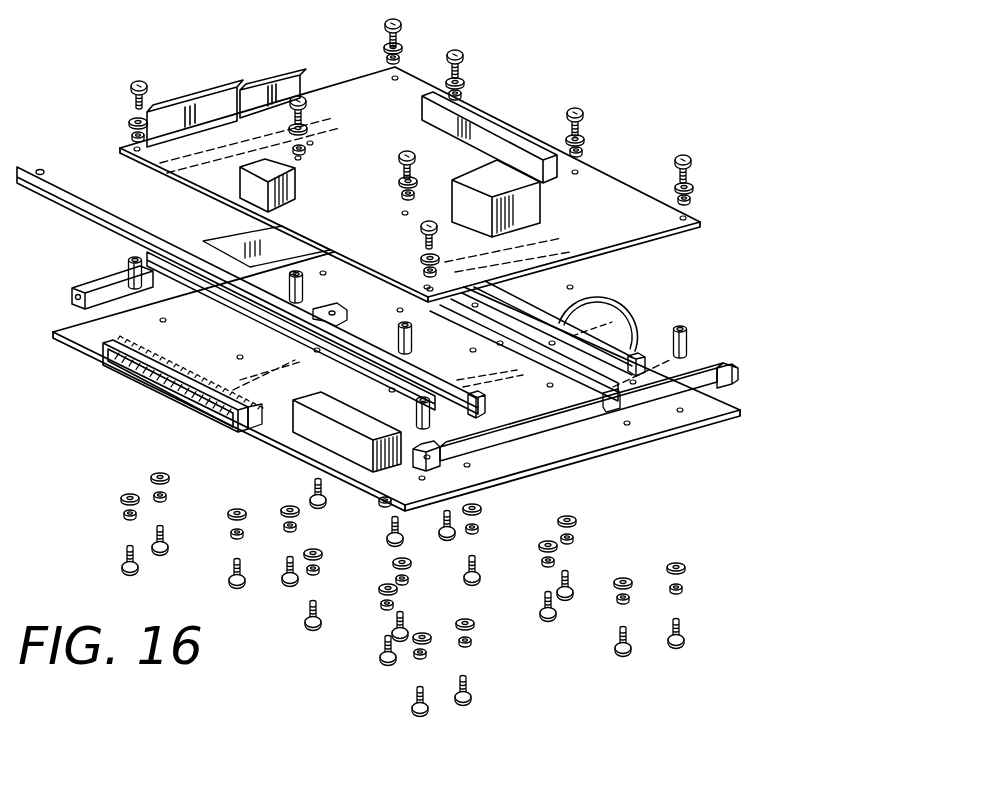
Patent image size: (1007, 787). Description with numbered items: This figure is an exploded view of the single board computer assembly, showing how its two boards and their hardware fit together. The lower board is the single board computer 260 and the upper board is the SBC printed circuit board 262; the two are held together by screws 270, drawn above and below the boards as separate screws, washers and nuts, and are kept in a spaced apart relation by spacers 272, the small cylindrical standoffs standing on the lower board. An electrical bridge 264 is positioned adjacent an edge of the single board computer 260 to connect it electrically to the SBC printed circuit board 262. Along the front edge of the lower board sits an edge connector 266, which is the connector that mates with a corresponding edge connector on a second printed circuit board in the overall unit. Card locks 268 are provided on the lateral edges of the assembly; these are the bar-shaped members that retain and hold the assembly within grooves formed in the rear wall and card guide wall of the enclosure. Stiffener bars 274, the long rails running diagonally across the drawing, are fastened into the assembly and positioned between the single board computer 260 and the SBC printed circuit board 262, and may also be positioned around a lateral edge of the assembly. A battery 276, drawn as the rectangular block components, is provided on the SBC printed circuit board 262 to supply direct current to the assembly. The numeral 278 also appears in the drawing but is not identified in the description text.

The single board computer 260 is at (715, 415).
The SBC printed circuit board 262 is at (373, 214).
The electrical bridge 264 is at (628, 301).
The edge connector 266 is at (148, 393).
The card locks 268 is at (73, 286).
The screws 270 is at (677, 152).
The spacers 272 is at (690, 339).
The stiffener bars 274 is at (165, 244).
The battery 276 is at (499, 343).
The connector pins 278 is at (260, 348).